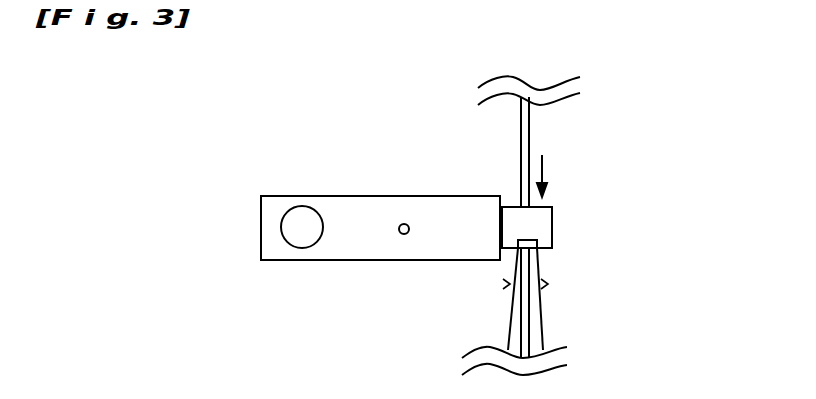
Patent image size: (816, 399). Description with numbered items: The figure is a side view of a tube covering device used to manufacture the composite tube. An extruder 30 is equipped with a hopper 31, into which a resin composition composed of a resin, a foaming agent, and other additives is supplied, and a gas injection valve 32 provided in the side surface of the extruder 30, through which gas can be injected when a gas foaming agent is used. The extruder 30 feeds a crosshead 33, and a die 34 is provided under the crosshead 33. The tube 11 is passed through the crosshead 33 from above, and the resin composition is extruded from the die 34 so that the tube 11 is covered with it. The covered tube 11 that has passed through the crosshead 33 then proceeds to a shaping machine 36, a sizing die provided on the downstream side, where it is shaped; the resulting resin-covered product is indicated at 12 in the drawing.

The tube 11 is at (528, 140).
The sheath tube 12 is at (516, 305).
The extruder 30 is at (360, 240).
The hopper 31 is at (300, 234).
The gas injection valve 32 is at (404, 236).
The crosshead 33 is at (535, 222).
The die 34 is at (535, 242).
The shaping machine 36 is at (546, 284).